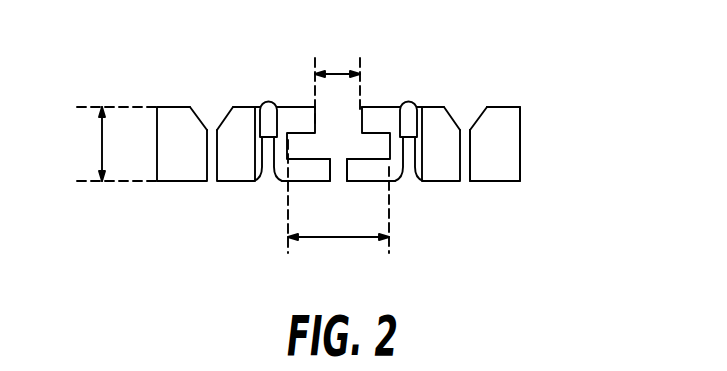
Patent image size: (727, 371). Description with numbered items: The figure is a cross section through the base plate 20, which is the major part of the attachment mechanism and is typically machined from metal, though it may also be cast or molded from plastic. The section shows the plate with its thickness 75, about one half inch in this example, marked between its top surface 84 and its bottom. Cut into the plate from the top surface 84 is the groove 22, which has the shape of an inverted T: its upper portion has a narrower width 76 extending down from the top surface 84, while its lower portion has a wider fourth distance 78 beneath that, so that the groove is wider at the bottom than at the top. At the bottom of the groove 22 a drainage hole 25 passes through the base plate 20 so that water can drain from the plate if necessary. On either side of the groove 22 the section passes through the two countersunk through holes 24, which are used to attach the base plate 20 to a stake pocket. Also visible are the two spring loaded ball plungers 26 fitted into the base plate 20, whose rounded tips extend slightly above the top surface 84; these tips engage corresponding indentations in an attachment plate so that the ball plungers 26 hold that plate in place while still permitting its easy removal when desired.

The base plate 20 is at (505, 147).
The groove 22 is at (334, 122).
The countersunk holes 24 is at (212, 115).
The drainage hole 25 is at (340, 173).
The ball plungers 26 is at (268, 167).
The thickness 75 is at (102, 147).
The width of the groove 76 is at (337, 73).
The fourth distance 78 is at (334, 237).
The top surface 84 is at (381, 106).